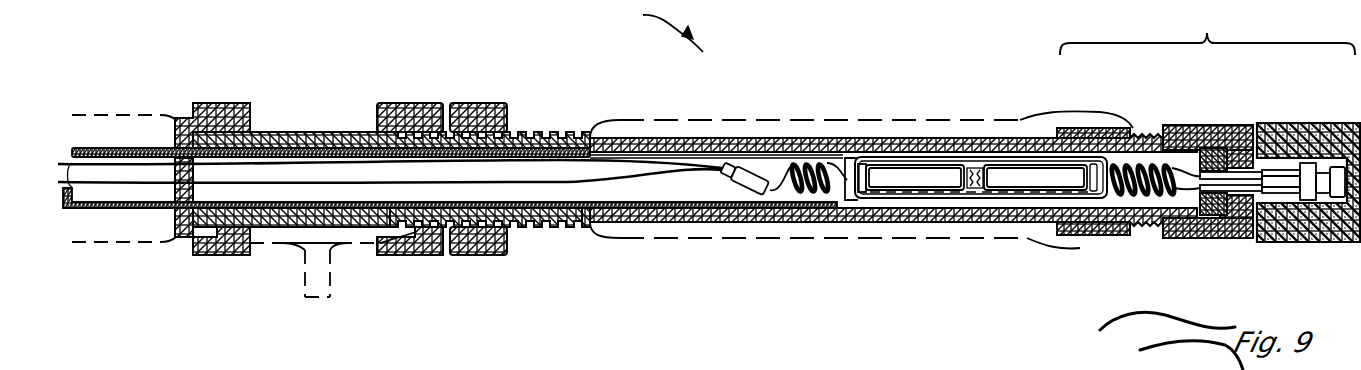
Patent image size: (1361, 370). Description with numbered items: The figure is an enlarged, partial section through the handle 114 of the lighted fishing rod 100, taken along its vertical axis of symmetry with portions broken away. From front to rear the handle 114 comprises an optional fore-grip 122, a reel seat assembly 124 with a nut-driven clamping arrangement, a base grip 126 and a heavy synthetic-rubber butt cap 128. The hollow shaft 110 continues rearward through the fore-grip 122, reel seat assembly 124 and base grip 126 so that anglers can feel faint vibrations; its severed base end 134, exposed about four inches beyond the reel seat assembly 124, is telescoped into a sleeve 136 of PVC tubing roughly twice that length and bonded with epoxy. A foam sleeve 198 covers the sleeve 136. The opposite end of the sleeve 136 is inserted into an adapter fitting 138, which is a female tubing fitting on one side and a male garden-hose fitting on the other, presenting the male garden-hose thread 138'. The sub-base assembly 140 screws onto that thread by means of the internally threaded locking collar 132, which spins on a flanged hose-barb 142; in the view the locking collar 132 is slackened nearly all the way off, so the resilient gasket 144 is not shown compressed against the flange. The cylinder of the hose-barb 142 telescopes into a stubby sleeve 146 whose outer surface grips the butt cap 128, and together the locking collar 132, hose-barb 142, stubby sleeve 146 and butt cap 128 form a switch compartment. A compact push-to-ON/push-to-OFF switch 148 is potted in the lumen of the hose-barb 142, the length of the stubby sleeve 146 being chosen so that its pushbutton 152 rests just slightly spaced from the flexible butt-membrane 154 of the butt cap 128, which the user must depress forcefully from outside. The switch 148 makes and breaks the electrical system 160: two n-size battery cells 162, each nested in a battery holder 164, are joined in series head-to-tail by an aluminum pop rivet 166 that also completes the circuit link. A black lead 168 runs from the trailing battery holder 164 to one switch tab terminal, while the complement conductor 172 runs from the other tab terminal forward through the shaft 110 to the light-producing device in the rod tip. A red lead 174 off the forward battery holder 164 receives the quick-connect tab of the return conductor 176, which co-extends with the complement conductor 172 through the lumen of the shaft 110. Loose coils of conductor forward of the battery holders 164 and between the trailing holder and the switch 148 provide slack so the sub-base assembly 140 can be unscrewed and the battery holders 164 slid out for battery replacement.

The lighted fishing rod 100 is at (627, 21).
The handle 114 is at (673, 33).
The hollow shaft 110 is at (140, 150).
The fore-grip 122 is at (120, 243).
The reel seat assembly 124 is at (397, 256).
The base grip 126 is at (641, 238).
The foam sleeve 198 is at (382, 217).
The complement conductor 172 is at (565, 162).
The return conductor 176 is at (557, 228).
The base end of shaft 134 is at (853, 150).
The sleeve 136 is at (707, 222).
The red lead 174 is at (843, 183).
The n-size battery cell 162 is at (953, 170).
The battery holder 164 is at (893, 187).
The aluminum pop rivet 166 is at (968, 175).
The black lead 168 is at (1097, 172).
The male garden-hose thread 138' is at (1069, 109).
The adapter fitting 138 is at (860, 253).
The electrical system 160 is at (1148, 138).
The compressed gasket 144 is at (1213, 138).
The flanged hose-barb 142 is at (1248, 240).
The locking collar 132 is at (1210, 218).
The stubby sleeve 146 is at (1252, 124).
The pushbutton 152 is at (1307, 124).
The push-to-ON/push-to-OFF switch 148 is at (1308, 195).
The flexible butt-membrane 154 is at (1337, 166).
The butt cap 128 is at (1350, 242).
The sub-base assembly 140 is at (1207, 28).